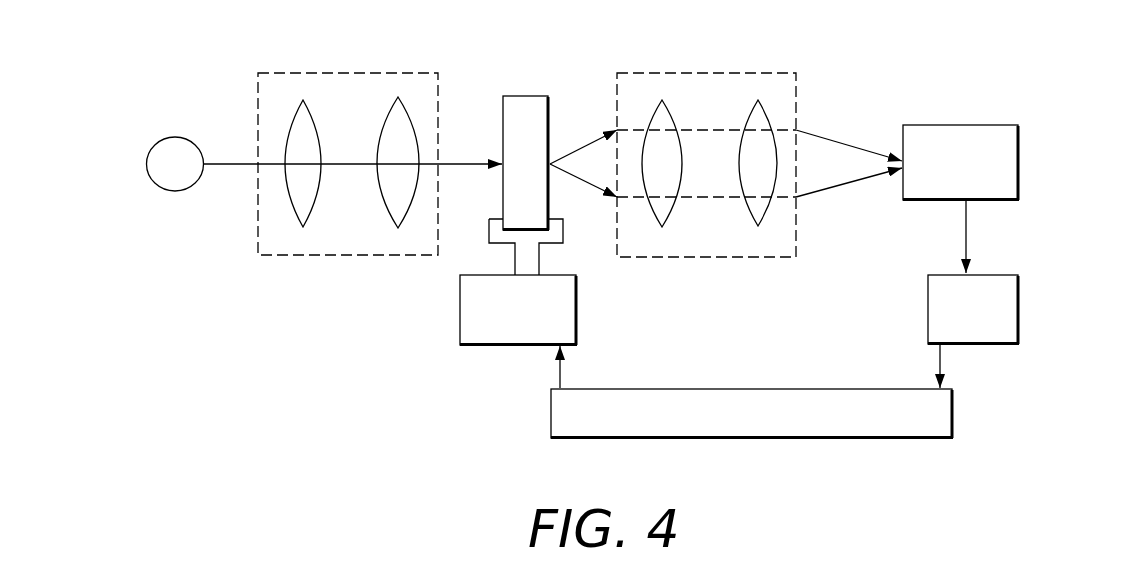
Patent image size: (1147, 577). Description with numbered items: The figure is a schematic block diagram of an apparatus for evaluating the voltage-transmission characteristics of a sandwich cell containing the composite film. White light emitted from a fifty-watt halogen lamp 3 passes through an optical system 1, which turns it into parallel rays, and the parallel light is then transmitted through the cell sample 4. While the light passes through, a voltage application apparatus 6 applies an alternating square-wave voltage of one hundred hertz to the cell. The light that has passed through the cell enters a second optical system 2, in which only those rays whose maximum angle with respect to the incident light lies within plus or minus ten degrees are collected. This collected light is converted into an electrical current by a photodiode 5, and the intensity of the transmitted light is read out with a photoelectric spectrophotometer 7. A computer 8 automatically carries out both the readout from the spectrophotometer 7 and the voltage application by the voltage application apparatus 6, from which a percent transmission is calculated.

The optical system 1 is at (328, 73).
The optical system 2 is at (697, 73).
The halogen lamp 3 is at (170, 137).
The cell sample 4 is at (527, 95).
The photodiode 5 is at (953, 123).
The voltage application apparatus 6 is at (460, 302).
The photoelectric spectrophotometer 7 is at (927, 308).
The computer 8 is at (692, 440).